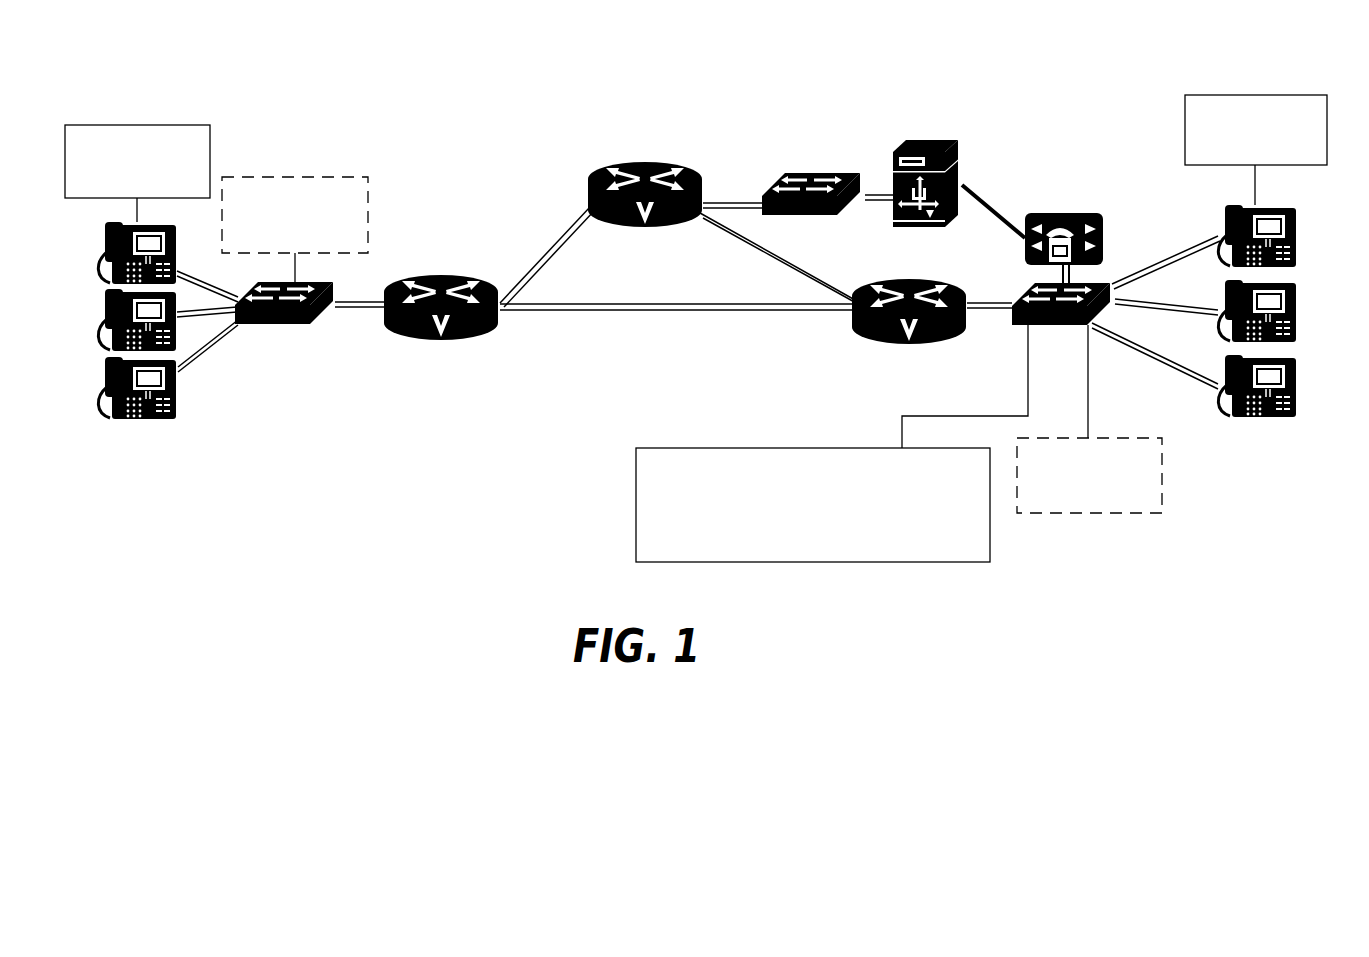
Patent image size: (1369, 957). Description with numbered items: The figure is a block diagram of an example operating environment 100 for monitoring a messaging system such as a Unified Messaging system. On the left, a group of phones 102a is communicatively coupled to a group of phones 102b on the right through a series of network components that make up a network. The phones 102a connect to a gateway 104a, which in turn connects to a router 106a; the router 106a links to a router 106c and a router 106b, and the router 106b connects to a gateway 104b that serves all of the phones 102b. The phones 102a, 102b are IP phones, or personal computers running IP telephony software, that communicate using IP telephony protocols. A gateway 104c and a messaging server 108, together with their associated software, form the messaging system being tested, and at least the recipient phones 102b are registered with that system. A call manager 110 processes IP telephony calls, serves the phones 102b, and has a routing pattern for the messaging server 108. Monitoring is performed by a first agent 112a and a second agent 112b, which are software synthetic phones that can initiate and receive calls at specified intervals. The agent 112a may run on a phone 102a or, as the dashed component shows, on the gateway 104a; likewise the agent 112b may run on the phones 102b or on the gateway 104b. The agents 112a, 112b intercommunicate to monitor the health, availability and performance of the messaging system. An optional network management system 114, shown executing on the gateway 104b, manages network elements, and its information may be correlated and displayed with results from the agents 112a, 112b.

The operating environment 100 is at (580, 70).
The phones 102a is at (100, 283).
The phones 102b is at (1297, 208).
The gateway 104a is at (260, 326).
The gateway 104b is at (1055, 328).
The gateway 104c is at (812, 217).
The router 106a is at (437, 340).
The router 106b is at (910, 345).
The router 106c is at (640, 228).
The messaging server 108 is at (930, 143).
The call manager 110 is at (1060, 212).
The first agent 112a is at (163, 192).
The second agent 112b is at (1230, 156).
The network management system 114 is at (832, 547).